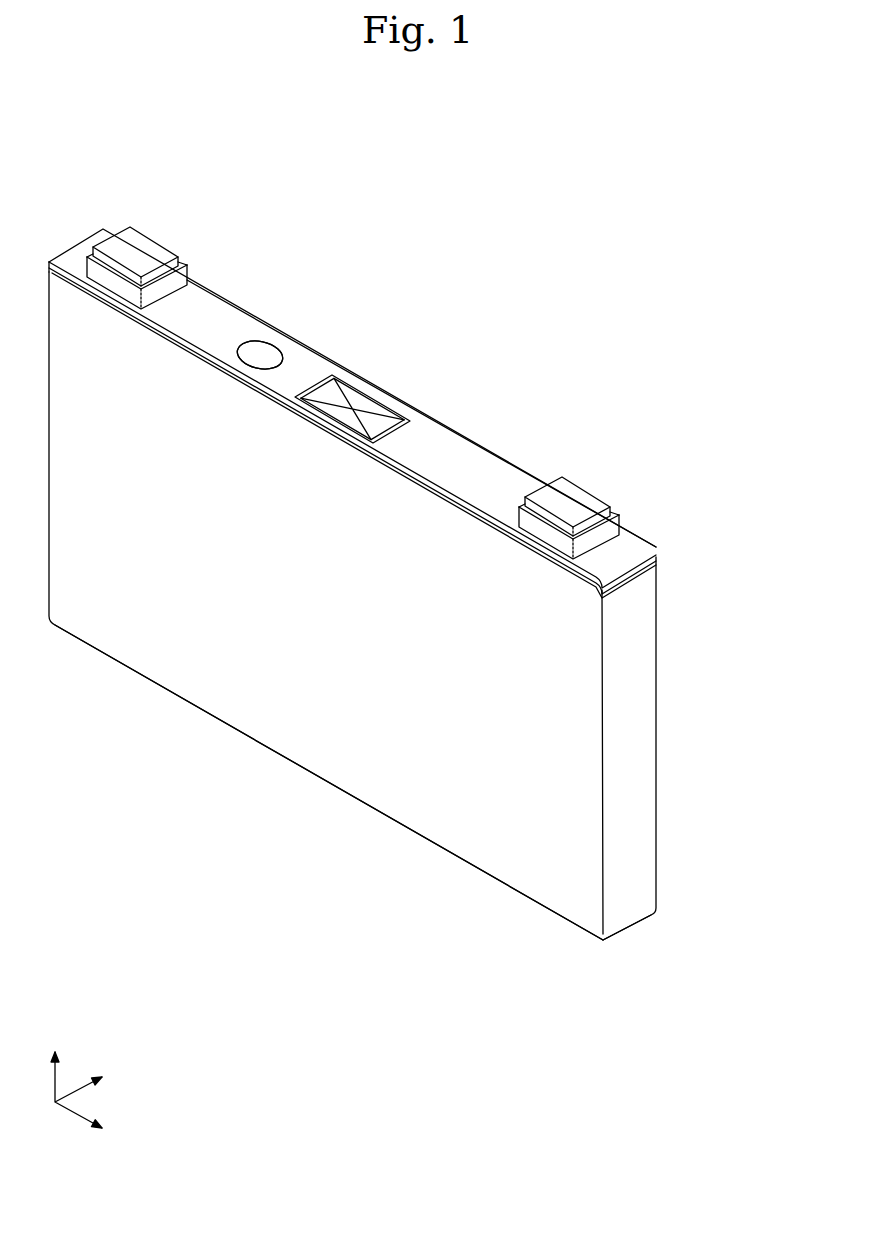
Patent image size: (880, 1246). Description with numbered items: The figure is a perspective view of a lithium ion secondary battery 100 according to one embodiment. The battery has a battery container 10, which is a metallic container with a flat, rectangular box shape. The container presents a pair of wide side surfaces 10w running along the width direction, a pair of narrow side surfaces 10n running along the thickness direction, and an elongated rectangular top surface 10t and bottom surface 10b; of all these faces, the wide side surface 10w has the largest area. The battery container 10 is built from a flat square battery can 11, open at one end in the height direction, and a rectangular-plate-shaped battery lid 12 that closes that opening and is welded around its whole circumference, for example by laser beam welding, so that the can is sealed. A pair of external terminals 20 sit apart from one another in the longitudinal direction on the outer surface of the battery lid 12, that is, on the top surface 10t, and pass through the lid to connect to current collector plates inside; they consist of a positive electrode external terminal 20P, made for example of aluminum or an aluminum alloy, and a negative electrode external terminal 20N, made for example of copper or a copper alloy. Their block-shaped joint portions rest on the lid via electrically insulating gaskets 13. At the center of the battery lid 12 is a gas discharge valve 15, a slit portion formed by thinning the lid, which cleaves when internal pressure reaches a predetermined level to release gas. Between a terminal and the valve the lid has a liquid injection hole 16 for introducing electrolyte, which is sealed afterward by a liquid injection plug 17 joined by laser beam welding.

The secondary battery 100 is at (551, 223).
The battery container 10 is at (730, 527).
The battery can 11 is at (640, 630).
The battery lid 12 is at (630, 557).
The gasket 13 is at (173, 284).
The gas discharge valve 15 is at (375, 422).
The liquid injection hole 16 is at (238, 343).
The liquid injection plug 17 is at (262, 355).
The external terminal 20 is at (338, 342).
The positive electrode external terminal 20P is at (132, 247).
The negative electrode external terminal 20N is at (565, 498).
The top surface 10t is at (447, 452).
The narrow side surface 10n is at (630, 753).
The wide side surface 10w is at (310, 705).
The bottom surface 10b is at (488, 877).